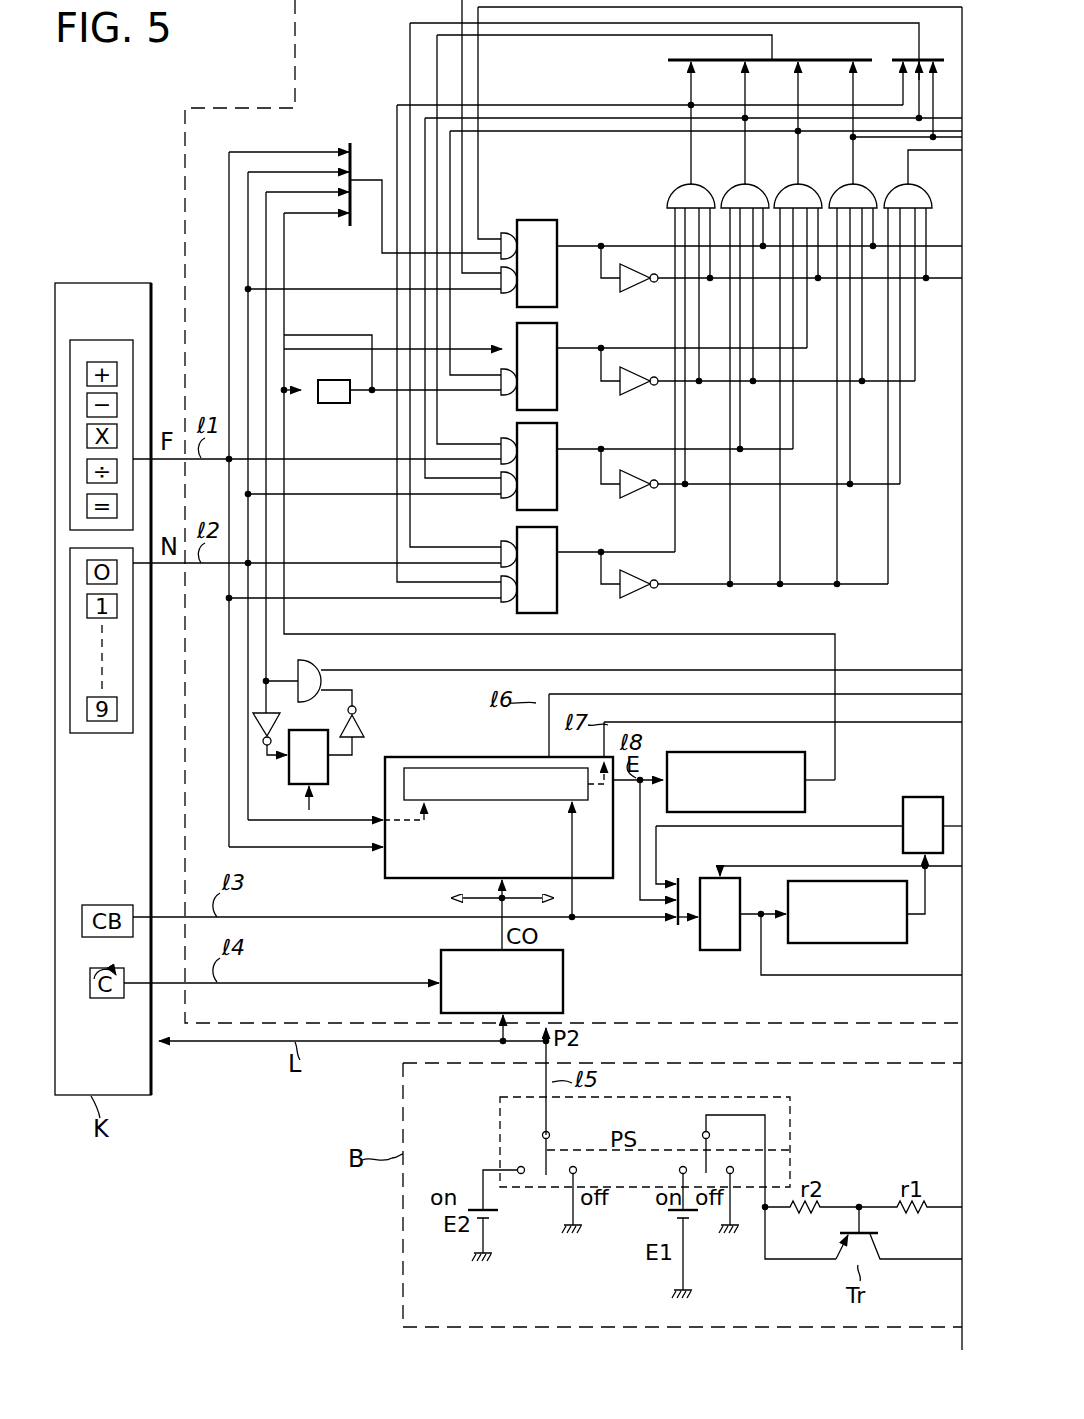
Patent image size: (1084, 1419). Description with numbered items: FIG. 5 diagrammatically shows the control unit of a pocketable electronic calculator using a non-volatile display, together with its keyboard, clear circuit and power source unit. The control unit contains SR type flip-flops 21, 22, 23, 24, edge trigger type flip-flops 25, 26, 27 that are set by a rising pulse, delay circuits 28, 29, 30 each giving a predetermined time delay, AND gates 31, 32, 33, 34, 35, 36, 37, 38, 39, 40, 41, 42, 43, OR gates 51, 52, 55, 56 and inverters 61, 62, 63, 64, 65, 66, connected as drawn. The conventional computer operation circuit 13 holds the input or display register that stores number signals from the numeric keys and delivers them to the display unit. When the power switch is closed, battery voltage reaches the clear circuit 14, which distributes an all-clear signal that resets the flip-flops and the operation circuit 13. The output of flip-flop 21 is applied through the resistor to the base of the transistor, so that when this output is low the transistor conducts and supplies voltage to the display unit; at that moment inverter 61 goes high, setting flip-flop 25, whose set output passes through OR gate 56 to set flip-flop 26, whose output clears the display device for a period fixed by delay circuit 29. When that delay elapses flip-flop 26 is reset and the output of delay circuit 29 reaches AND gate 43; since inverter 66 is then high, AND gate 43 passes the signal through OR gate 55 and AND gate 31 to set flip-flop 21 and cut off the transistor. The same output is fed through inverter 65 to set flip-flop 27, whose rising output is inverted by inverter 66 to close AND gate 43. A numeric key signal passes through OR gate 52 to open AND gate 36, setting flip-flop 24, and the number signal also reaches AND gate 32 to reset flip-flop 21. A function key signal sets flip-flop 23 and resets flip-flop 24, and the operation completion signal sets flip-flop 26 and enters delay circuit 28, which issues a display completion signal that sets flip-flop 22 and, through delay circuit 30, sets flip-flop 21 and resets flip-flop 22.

The computer operation circuit 13 is at (410, 757).
The clear circuit 14 is at (563, 966).
The SR type flip-flop 21 is at (530, 218).
The SR type flip-flop 22 is at (558, 324).
The SR type flip-flop 23 is at (558, 424).
The SR type flip-flop 24 is at (560, 528).
The edge trigger type flip-flop 25 is at (918, 796).
The edge trigger type flip-flop 26 is at (700, 940).
The edge trigger type flip-flop 27 is at (330, 775).
The delay circuit 28 is at (806, 802).
The delay circuit 29 is at (906, 944).
The delay circuit 30 is at (337, 403).
The AND gate 31 is at (500, 234).
The AND gate 32 is at (504, 300).
The AND gate 33 is at (500, 394).
The AND gate 34 is at (500, 445).
The AND gate 35 is at (500, 497).
The AND gate 36 is at (500, 547).
The AND gate 37 is at (500, 600).
The AND gate 38 is at (698, 135).
The AND gate 39 is at (753, 135).
The AND gate 40 is at (806, 135).
The AND gate 41 is at (860, 135).
The AND gate 42 is at (922, 182).
The AND gate 43 is at (320, 669).
The OR gate 51 is at (831, 60).
The OR gate 52 is at (926, 58).
The OR gate 55 is at (352, 143).
The OR gate 56 is at (680, 877).
The inverter 61 is at (636, 292).
The inverter 62 is at (636, 395).
The inverter 63 is at (636, 498).
The inverter 64 is at (640, 596).
The inverter 65 is at (278, 720).
The inverter 66 is at (361, 720).